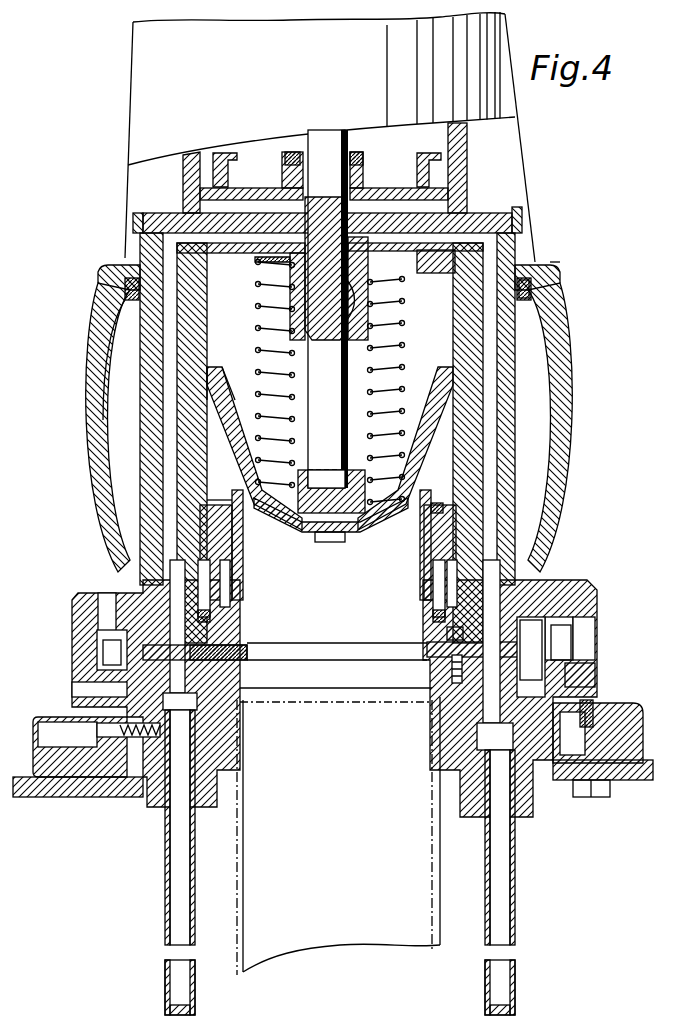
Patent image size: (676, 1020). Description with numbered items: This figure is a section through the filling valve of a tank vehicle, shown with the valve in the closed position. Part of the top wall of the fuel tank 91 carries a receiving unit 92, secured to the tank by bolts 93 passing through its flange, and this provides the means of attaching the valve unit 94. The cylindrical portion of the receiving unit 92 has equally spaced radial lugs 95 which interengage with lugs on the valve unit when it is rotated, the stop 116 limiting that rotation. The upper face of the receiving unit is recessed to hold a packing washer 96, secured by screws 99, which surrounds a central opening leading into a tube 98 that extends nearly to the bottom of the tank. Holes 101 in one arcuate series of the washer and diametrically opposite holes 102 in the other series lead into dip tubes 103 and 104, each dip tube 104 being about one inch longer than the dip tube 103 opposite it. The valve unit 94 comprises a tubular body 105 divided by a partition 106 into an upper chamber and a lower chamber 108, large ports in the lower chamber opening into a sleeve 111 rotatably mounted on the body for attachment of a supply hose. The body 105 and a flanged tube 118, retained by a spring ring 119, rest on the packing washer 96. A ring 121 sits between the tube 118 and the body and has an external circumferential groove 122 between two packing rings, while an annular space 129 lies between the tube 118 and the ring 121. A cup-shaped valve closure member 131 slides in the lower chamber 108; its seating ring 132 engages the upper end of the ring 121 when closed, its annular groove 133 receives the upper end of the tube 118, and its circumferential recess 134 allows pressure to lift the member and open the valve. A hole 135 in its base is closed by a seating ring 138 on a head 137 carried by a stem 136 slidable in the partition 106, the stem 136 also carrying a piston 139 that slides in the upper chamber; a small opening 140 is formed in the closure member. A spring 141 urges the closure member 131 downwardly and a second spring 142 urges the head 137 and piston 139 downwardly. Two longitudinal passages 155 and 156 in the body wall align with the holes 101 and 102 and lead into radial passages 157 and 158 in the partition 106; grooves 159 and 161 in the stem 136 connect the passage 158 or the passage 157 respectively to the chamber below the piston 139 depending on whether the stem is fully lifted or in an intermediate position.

The top wall of fuel tank 91 is at (30, 780).
The receiving unit 92 is at (590, 710).
The bolts 93 is at (590, 797).
The valve unit 94 is at (556, 266).
The radial lugs 95 is at (560, 650).
The packing washer 96 is at (545, 640).
The tube 98 is at (432, 890).
The screws 99 is at (248, 653).
The holes 101 is at (165, 640).
The holes 102 is at (500, 617).
The dip tube 103 is at (180, 855).
The dip tube 104 is at (500, 890).
The tubular body 105 is at (520, 375).
The partition 106 is at (470, 215).
The lower chamber 108 is at (455, 455).
The sleeve 111 is at (568, 400).
The stop 116 is at (100, 595).
The flanged tube 118 is at (422, 578).
The spring ring 119 is at (448, 638).
The ring 121 is at (433, 512).
The external circumferential groove 122 is at (560, 592).
The annular space 129 is at (225, 590).
The valve closure member 131 is at (225, 448).
The seating ring 132 is at (243, 560).
The annular groove 133 is at (225, 500).
The circumferential recess 134 is at (215, 438).
The hole 135 is at (342, 535).
The stem 136 is at (290, 290).
The head 137 is at (325, 520).
The seating ring 138 is at (300, 528).
The piston 139 is at (445, 192).
The small opening 140 is at (232, 420).
The spring 141 is at (395, 300).
The second spring 142 is at (290, 325).
The longitudinal passage 155 is at (170, 392).
The longitudinal passage 156 is at (497, 490).
The radial passage 157 is at (183, 205).
The radial passage 158 is at (524, 248).
The groove 159 is at (355, 300).
The groove 161 is at (288, 160).